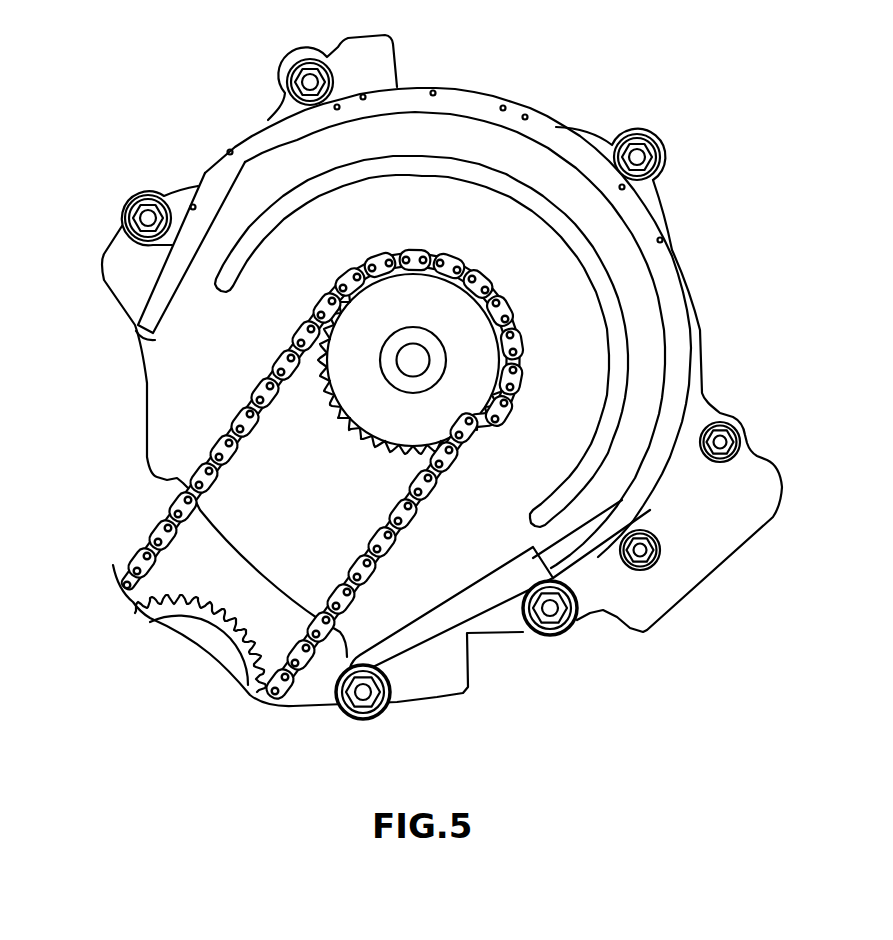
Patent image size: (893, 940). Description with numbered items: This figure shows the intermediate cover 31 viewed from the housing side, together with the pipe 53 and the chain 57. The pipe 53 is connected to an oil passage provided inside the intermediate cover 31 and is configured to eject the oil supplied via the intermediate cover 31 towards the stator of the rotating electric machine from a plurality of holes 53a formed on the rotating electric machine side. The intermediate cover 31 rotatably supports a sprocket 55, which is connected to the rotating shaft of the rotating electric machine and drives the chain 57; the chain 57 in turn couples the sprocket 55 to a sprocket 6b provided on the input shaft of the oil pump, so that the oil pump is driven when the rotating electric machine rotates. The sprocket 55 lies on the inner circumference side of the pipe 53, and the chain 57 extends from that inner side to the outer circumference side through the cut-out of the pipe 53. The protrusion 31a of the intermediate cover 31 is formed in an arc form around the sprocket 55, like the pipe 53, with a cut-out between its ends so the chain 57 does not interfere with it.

The intermediate cover 31 is at (147, 397).
The protrusion 31a is at (628, 330).
The pipe 53 is at (147, 288).
The holes 53a is at (510, 103).
The sprocket 55 is at (397, 447).
The chain 57 is at (157, 530).
The sprocket 6b is at (203, 592).